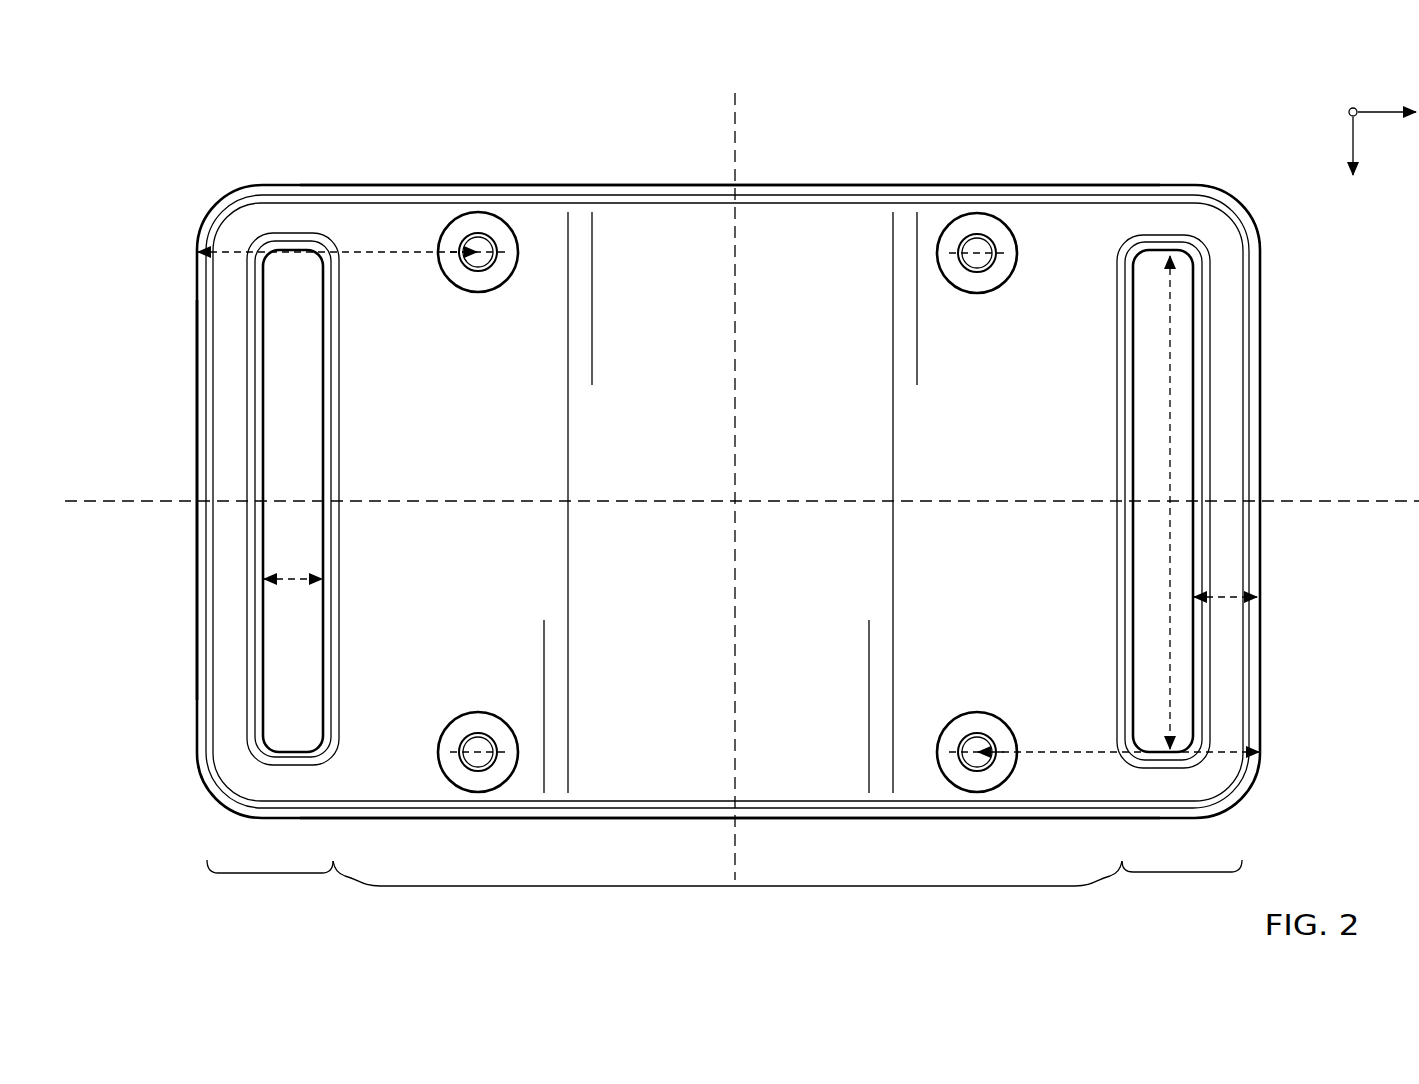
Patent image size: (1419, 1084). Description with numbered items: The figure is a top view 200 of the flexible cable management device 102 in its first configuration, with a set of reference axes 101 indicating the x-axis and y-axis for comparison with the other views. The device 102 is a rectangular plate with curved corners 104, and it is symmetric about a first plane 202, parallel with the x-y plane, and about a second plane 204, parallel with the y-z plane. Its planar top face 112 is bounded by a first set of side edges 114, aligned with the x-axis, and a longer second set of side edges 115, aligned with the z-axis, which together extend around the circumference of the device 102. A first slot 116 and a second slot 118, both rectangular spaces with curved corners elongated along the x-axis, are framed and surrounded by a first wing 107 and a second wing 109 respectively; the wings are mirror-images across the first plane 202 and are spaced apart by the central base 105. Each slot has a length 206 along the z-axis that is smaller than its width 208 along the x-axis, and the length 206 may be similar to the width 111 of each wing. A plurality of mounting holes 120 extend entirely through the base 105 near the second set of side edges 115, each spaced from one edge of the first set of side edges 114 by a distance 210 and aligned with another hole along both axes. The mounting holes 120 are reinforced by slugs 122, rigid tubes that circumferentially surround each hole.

The top view 200 is at (150, 146).
The set of reference axes 101 is at (1328, 128).
The cable management device 102 is at (293, 169).
The curved corners 104 is at (1228, 198).
The base 105 is at (735, 886).
The first wing 107 is at (270, 873).
The second wing 109 is at (1182, 872).
The width of the first wing 111 is at (1225, 600).
The top face 112 is at (794, 386).
The first set of side edges 114 is at (207, 576).
The second set of side edges 115 is at (865, 194).
The first slot 116 is at (307, 438).
The second slot 118 is at (1148, 437).
The mounting holes 120 is at (482, 255).
The slugs 122 is at (480, 292).
The first plane 202 is at (735, 153).
The second plane 204 is at (1290, 502).
The length of the slots 206 is at (285, 582).
The width of the slots 208 is at (1170, 614).
The distance 210 is at (370, 250).